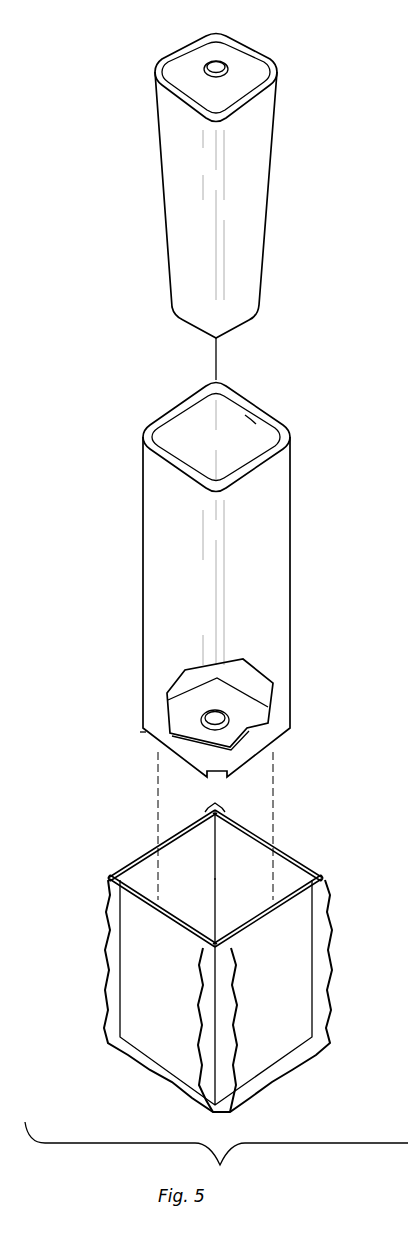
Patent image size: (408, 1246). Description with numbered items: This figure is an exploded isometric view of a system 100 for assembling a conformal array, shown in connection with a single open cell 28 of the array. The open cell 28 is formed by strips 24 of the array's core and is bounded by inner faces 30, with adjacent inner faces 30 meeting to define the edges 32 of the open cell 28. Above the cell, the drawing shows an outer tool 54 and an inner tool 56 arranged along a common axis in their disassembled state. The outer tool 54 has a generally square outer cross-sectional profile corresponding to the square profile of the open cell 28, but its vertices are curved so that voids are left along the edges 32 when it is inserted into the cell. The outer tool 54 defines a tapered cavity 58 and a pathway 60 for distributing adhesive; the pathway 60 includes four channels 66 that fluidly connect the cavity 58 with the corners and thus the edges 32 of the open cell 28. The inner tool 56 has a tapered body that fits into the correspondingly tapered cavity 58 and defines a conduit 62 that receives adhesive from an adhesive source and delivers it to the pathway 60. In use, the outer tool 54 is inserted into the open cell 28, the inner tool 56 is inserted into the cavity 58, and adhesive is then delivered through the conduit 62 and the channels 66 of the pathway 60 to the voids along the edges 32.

The system 100 is at (407, 42).
The inner tool 56 is at (272, 176).
The conduit 62 is at (206, 62).
The outer tool 54 is at (293, 500).
The cavity 58 is at (246, 418).
The pathway 60 is at (224, 712).
The channels 66 is at (143, 729).
The strips 24 is at (143, 853).
The edges 32 is at (213, 870).
The open cell 28 is at (234, 868).
The inner faces 30 is at (203, 907).